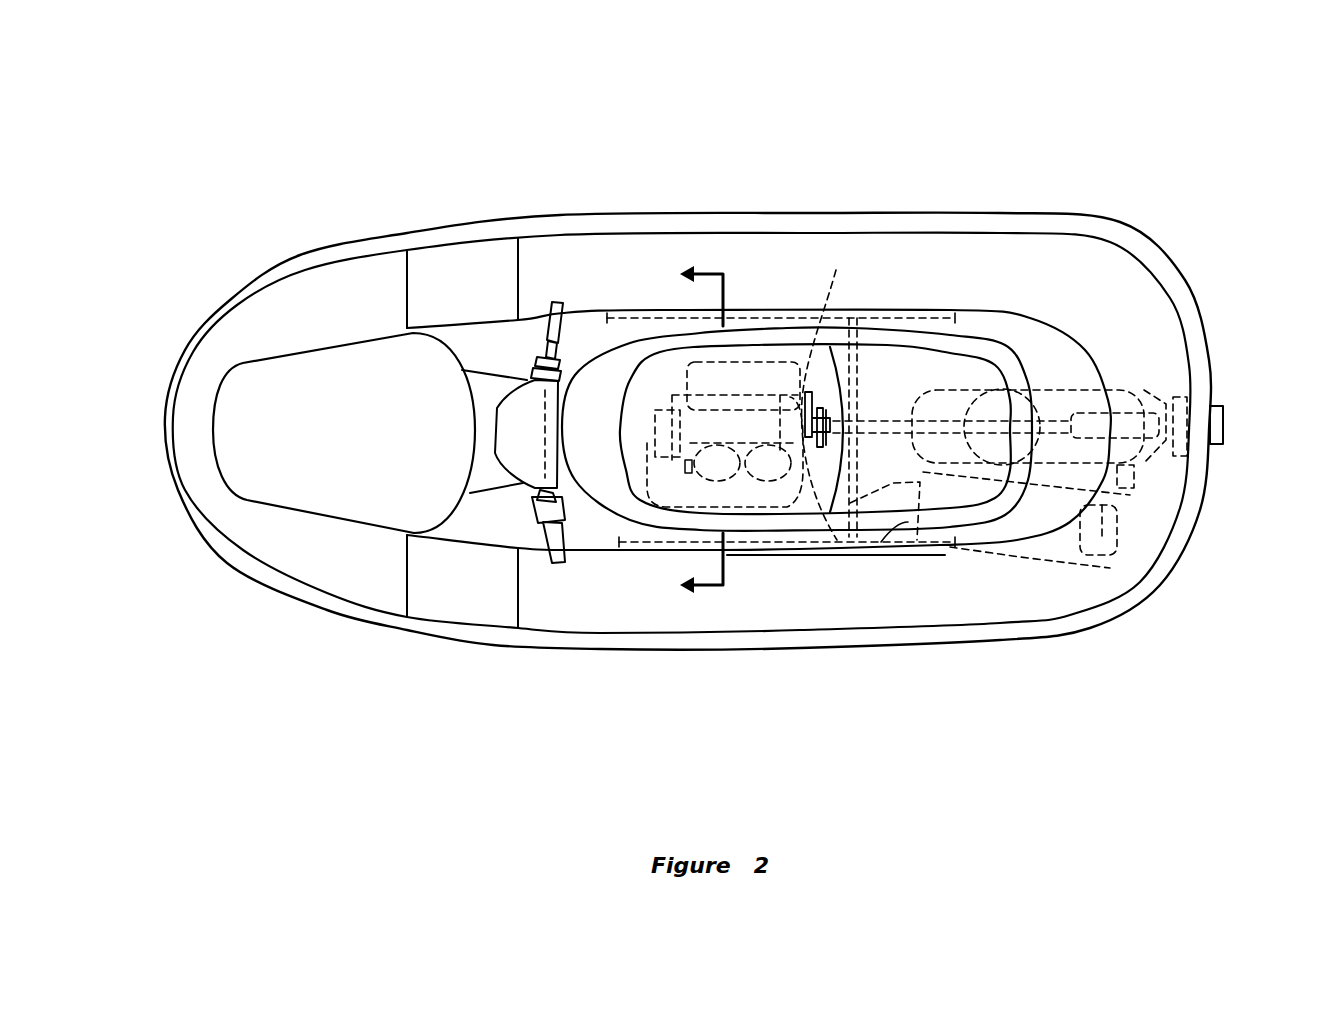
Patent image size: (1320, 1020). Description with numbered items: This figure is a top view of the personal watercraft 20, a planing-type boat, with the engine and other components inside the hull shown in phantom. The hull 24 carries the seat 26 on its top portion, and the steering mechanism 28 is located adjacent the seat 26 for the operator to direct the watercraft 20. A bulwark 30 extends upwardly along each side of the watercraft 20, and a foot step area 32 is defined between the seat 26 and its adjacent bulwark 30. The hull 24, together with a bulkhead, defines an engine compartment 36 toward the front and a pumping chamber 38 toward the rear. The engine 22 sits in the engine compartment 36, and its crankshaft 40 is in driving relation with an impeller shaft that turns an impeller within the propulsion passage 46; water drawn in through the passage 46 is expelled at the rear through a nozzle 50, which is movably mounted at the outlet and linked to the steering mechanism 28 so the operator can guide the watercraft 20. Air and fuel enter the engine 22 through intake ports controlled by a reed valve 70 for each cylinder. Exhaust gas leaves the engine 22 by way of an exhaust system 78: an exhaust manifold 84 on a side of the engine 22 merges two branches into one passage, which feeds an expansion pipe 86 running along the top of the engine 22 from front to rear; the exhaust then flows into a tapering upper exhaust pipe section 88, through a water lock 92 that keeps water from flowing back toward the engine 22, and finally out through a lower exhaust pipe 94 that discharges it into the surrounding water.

The personal watercraft 20 is at (1068, 158).
The engine 22 is at (785, 482).
The hull 24 is at (375, 629).
The seat 26 is at (977, 372).
The steering mechanism 28 is at (557, 302).
The bulwark 30 is at (912, 222).
The foot step area 32 is at (806, 245).
The engine compartment 36 is at (640, 530).
The pumping chamber 38 is at (902, 373).
The crankshaft 40 is at (830, 390).
The propulsion passage 46 is at (1077, 392).
The nozzle 50 is at (1224, 415).
The reed valve 70 is at (888, 542).
The exhaust system 78 is at (668, 400).
The exhaust manifold 84 is at (737, 510).
The expansion pipe 86 is at (743, 393).
The upper exhaust pipe section 88 is at (805, 480).
The water lock 92 is at (1020, 557).
The lower exhaust pipe 94 is at (1101, 529).